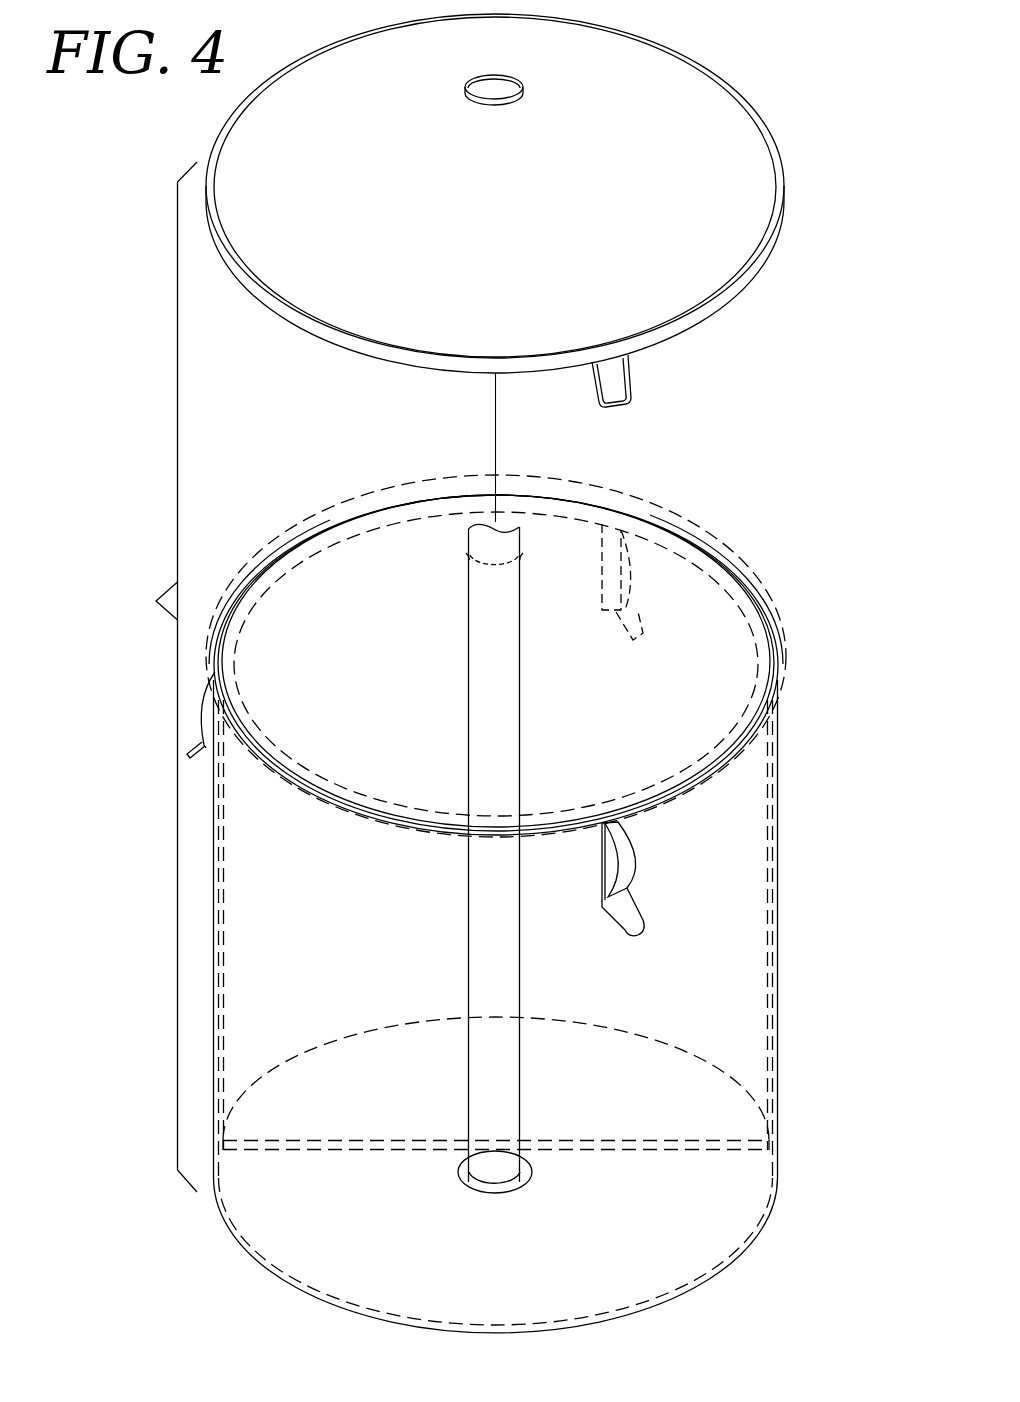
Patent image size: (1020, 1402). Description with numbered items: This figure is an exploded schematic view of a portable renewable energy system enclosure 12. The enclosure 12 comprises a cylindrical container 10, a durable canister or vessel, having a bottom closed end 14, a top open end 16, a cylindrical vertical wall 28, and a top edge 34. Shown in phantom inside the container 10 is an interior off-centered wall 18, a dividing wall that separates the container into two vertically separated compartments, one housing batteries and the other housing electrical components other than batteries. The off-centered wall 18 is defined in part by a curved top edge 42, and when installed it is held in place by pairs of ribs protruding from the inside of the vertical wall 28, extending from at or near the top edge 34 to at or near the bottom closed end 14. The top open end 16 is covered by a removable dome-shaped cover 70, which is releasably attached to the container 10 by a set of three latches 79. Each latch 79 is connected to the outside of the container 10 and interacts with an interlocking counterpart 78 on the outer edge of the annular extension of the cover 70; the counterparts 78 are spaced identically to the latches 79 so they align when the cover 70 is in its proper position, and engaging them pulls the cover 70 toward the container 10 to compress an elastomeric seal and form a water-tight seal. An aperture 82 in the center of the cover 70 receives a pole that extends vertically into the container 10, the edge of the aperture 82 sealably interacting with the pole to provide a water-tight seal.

The cylindrical container 10 is at (740, 1262).
The enclosure 12 is at (158, 677).
The bottom closed end 14 is at (297, 1227).
The top open end 16 is at (716, 652).
The interior off-centered wall 18 is at (728, 938).
The cylindrical vertical wall 28 is at (776, 1027).
The top edge 34 is at (748, 738).
The curved top edge 42 is at (598, 514).
The dome-shaped cover 70 is at (727, 181).
The interlocking counterpart 78 is at (633, 386).
The latch 79 is at (630, 866).
The aperture 82 is at (507, 88).